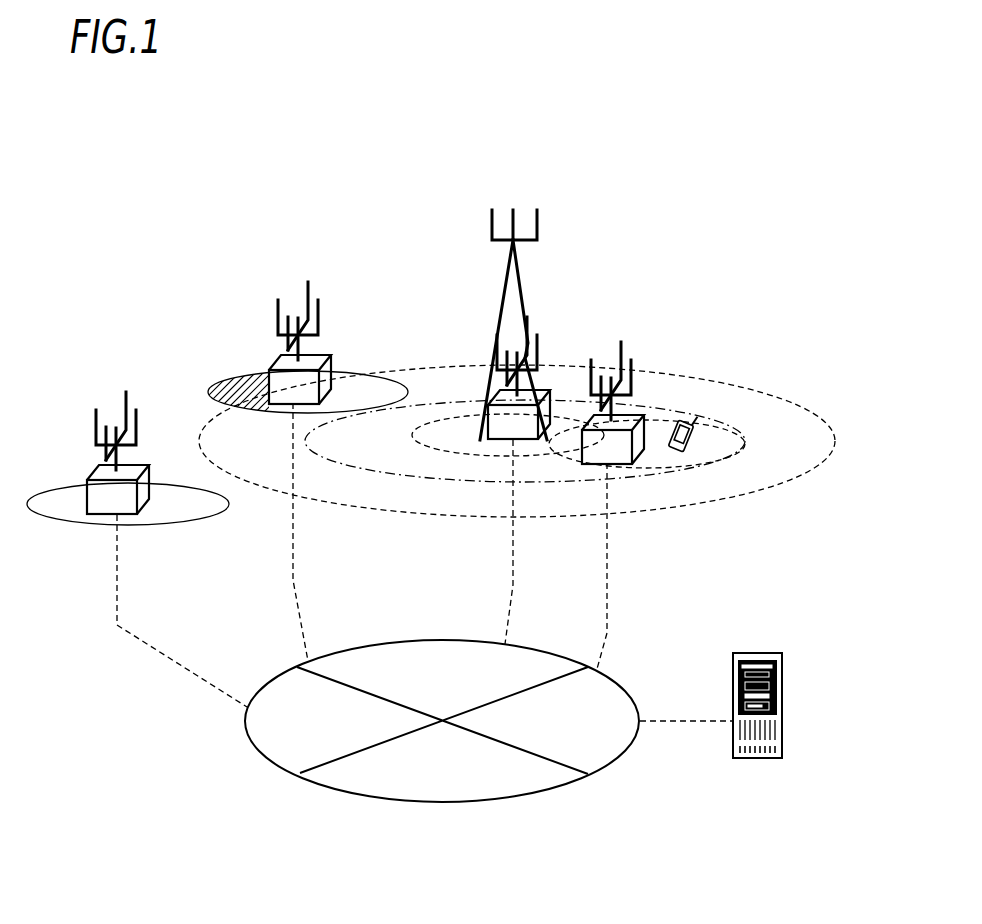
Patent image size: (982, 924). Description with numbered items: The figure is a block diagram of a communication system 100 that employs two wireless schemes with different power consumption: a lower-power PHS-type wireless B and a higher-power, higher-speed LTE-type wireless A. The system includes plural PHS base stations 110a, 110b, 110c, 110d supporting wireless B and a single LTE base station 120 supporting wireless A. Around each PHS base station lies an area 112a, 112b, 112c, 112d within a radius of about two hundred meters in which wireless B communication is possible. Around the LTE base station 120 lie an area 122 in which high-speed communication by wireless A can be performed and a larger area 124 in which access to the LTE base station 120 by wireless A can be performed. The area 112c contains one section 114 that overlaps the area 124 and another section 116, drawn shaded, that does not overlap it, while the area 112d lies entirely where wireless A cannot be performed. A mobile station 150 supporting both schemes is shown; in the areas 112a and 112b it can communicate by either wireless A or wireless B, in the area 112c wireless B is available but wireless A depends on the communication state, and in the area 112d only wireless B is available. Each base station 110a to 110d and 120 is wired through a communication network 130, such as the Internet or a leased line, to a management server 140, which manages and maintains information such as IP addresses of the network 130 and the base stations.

The communication system 100 is at (416, 196).
The PHS base station 110a is at (523, 420).
The PHS base station 110b is at (640, 437).
The PHS base station 110c is at (277, 385).
The PHS base station 110d is at (93, 507).
The area 112a is at (458, 430).
The area 112b is at (560, 465).
The area 112c is at (358, 377).
The area 112d is at (172, 507).
The section 114 is at (388, 387).
The section 116 is at (227, 382).
The LTE base station 120 is at (520, 268).
The area 122 is at (373, 472).
The area 124 is at (262, 488).
The communication network 130 is at (420, 640).
The management server 140 is at (782, 707).
The mobile station 150 is at (693, 450).